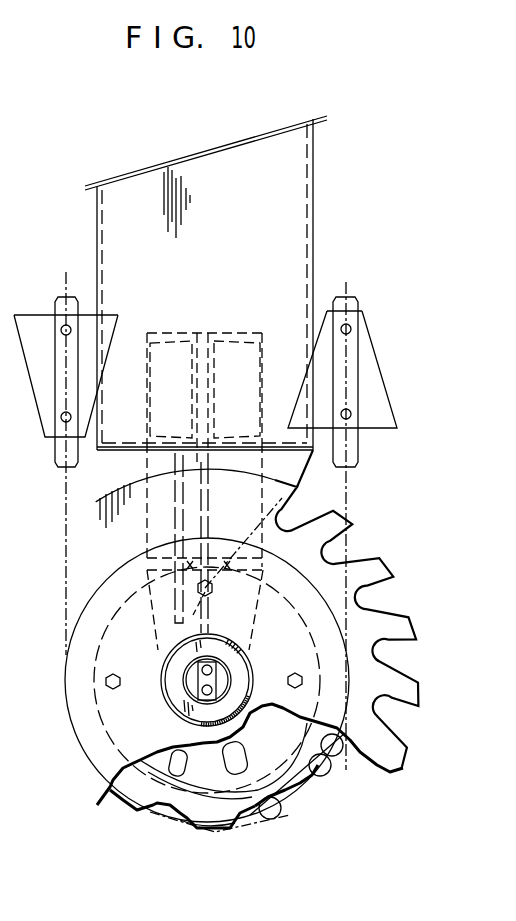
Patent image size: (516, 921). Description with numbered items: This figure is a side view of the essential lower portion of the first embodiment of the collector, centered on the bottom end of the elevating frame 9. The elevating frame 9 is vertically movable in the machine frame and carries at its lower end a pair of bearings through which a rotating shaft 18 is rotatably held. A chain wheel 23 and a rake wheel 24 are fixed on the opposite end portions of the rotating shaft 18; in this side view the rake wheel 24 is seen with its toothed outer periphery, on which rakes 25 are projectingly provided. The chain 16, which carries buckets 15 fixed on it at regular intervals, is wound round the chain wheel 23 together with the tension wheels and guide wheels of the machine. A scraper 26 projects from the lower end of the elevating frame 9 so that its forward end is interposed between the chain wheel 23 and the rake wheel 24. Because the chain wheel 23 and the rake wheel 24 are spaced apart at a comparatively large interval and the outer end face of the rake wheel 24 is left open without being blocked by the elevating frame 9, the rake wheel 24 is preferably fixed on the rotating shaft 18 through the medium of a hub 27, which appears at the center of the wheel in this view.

The elevating frame 9 is at (292, 217).
The buckets 15 is at (372, 382).
The chain 16 is at (66, 553).
The rotating shaft 18 is at (190, 673).
The chain wheel 23 is at (195, 834).
The rake wheel 24 is at (318, 568).
The rakes 25 is at (368, 748).
The scraper 26 is at (190, 508).
The hub 27 is at (190, 713).